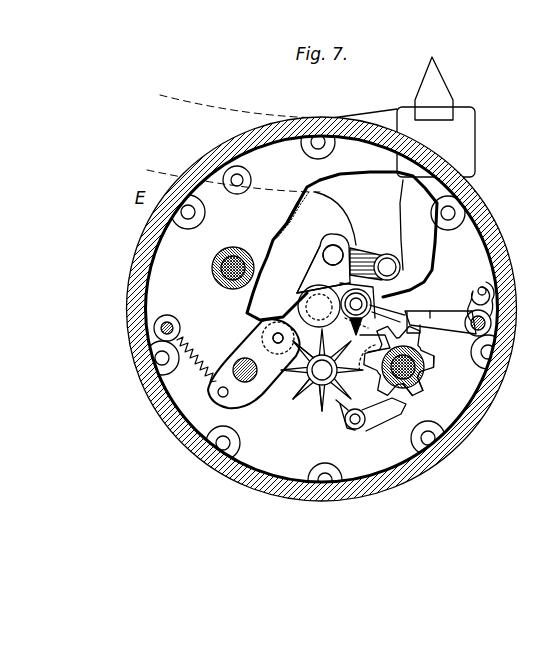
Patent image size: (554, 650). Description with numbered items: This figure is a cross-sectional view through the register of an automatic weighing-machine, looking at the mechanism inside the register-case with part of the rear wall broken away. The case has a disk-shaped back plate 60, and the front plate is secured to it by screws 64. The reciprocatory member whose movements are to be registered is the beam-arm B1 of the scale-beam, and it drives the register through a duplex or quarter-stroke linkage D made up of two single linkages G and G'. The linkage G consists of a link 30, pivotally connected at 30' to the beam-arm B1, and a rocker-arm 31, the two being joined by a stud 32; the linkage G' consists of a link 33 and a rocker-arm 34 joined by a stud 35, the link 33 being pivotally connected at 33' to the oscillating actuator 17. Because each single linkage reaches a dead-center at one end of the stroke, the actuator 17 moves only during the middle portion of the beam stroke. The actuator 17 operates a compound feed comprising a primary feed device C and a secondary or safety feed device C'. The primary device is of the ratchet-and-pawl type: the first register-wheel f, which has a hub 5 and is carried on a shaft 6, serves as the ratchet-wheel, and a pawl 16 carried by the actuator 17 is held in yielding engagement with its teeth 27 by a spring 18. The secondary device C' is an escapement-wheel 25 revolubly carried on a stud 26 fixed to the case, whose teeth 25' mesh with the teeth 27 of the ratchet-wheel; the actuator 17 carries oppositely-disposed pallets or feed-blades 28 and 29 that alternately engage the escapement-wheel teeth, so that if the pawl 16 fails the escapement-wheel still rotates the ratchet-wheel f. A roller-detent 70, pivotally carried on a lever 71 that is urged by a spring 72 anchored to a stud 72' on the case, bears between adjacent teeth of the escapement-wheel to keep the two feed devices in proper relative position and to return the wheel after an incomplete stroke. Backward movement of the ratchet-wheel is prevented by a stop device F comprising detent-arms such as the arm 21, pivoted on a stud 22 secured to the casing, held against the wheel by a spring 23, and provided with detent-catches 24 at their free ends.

The beam-arm B1 is at (370, 116).
The screws 64 is at (318, 142).
The hub 5 is at (226, 278).
The shaft 6 is at (236, 260).
The duplex-linkage connection D is at (342, 246).
The back plate 60 is at (280, 210).
The single linkage G is at (324, 257).
The stud 32 is at (326, 250).
The rocker-arm 31 is at (316, 253).
The rocker-arm 34 is at (340, 288).
The link 30 is at (375, 252).
The pivotal connection 30' is at (418, 225).
The single linkage G' is at (319, 306).
The stud 35 is at (357, 309).
The link 33 is at (348, 322).
The pivotal connection 33' is at (374, 353).
The stud 26 is at (322, 370).
The escapement-wheel 25 is at (294, 363).
The teeth of escapement-wheel 25' is at (313, 406).
The secondary feed device C' is at (295, 393).
The primary feed device C is at (409, 360).
The register-wheel f is at (437, 362).
The teeth of ratchet-wheel 27 is at (420, 392).
The spring 18 is at (406, 403).
The actuator 17 is at (355, 429).
The pallet 29 is at (340, 410).
The pawl 16 is at (386, 418).
The lever 71 is at (252, 349).
The roller-detent 70 is at (272, 333).
The spring 72 is at (197, 355).
The stud 72' is at (137, 328).
The stop device F is at (440, 322).
The detent-catches 24 is at (418, 316).
The detent-arm 21 is at (446, 314).
The pallet 28 is at (382, 318).
The stud 22 is at (492, 323).
The spring 23 is at (494, 290).